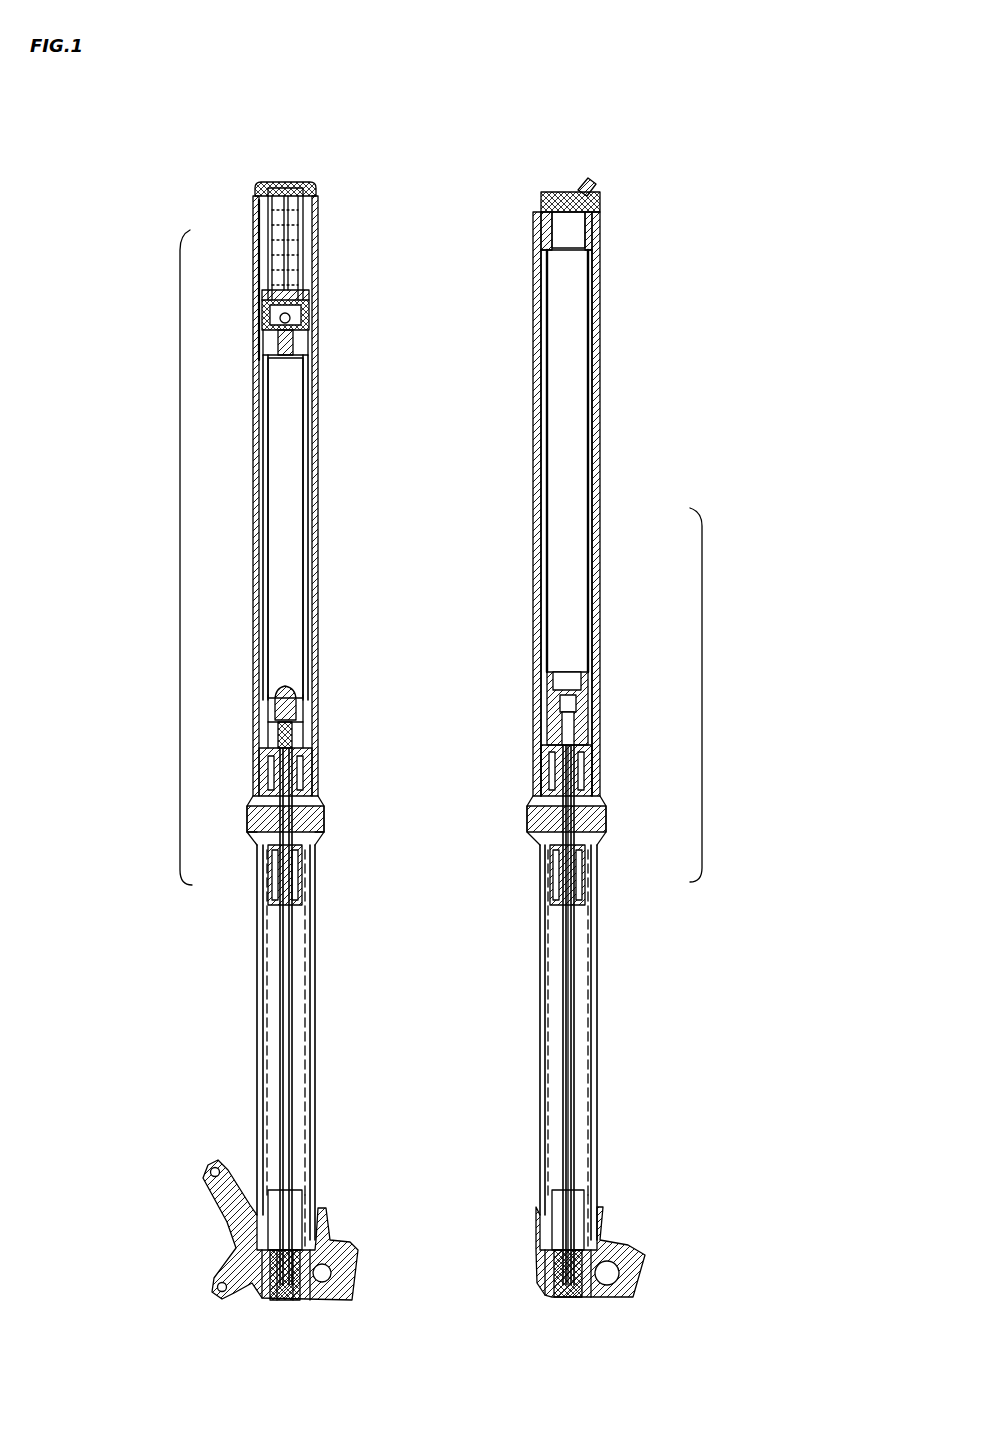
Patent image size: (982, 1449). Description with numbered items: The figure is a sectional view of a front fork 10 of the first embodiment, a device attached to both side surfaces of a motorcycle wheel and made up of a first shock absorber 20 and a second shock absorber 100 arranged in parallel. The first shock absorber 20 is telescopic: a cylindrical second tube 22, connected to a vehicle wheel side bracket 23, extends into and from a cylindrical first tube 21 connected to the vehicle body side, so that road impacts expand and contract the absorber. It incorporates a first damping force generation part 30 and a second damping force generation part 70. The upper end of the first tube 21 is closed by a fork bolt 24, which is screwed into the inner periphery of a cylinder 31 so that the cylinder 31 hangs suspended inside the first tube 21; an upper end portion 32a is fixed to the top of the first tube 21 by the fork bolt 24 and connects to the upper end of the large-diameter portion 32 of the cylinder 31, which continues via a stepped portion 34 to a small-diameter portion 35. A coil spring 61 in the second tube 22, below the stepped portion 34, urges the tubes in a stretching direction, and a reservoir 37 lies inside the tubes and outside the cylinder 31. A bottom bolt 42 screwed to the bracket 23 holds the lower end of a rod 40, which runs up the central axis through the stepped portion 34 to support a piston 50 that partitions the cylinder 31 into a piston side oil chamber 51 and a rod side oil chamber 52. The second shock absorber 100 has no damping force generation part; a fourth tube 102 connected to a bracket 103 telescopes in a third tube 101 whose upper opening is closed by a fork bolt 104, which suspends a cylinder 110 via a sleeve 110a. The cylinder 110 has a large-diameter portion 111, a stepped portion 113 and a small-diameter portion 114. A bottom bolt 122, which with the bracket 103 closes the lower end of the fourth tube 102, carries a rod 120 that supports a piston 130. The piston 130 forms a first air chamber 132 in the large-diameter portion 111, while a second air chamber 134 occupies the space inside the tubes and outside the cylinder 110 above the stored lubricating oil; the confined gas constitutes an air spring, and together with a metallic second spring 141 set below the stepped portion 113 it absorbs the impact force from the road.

The front fork 10 is at (753, 123).
The first shock absorber 20 is at (360, 180).
The first tube 21 is at (318, 430).
The second tube 22 is at (262, 1010).
The bracket 23 is at (232, 1232).
The fork bolt 24 is at (288, 184).
The first damping force generation part 30 is at (330, 668).
The cylinder 31 is at (180, 560).
The large-diameter portion 32 is at (262, 540).
The upper end portion 32a is at (257, 264).
The stepped portion 34 is at (262, 746).
The small-diameter portion 35 is at (278, 880).
The reservoir 37 is at (298, 1068).
The rod 40 is at (290, 946).
The bottom bolt 42 is at (285, 1300).
The piston 50 is at (312, 700).
The piston side oil chamber 51 is at (288, 487).
The rod side oil chamber 52 is at (298, 732).
The coil spring 61 is at (316, 1134).
The second damping force generation part 70 is at (330, 284).
The second shock absorber 100 is at (615, 178).
The third tube 101 is at (533, 408).
The fourth tube 102 is at (540, 1010).
The bracket 103 is at (545, 1264).
The fork bolt 104 is at (578, 186).
The cylinder 110 is at (702, 698).
The sleeve 110a is at (592, 230).
The large-diameter portion 111 is at (600, 540).
The stepped portion 113 is at (598, 744).
The small-diameter portion 114 is at (598, 876).
The rod 120 is at (578, 950).
The bottom bolt 122 is at (570, 1298).
The piston 130 is at (548, 674).
The first air chamber 132 is at (576, 375).
The second air chamber 134 is at (582, 1070).
The second spring 141 is at (598, 1153).